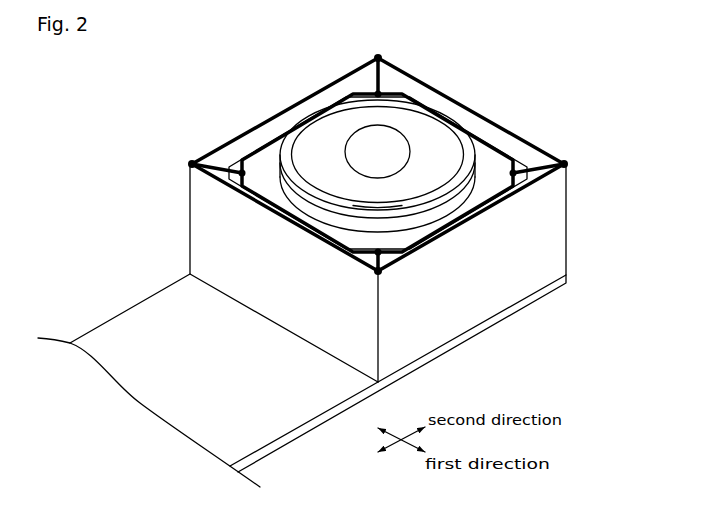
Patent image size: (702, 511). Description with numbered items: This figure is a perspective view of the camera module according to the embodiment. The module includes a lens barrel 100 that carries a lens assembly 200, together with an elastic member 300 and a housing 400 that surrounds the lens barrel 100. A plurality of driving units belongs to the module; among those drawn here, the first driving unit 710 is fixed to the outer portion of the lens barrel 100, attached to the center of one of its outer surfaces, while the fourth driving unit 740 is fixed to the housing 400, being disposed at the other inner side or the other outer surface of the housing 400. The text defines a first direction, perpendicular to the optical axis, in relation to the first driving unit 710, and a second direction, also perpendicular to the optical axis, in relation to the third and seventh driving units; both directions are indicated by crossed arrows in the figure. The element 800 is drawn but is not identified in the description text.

The lens barrel 100 is at (478, 160).
The lens assembly 200 is at (325, 142).
The elastic member 300 is at (543, 153).
The housing 400 is at (198, 228).
The first driving unit 710 is at (480, 217).
The fourth driving unit 740 is at (213, 162).
The flexible circuit board 800 is at (130, 318).